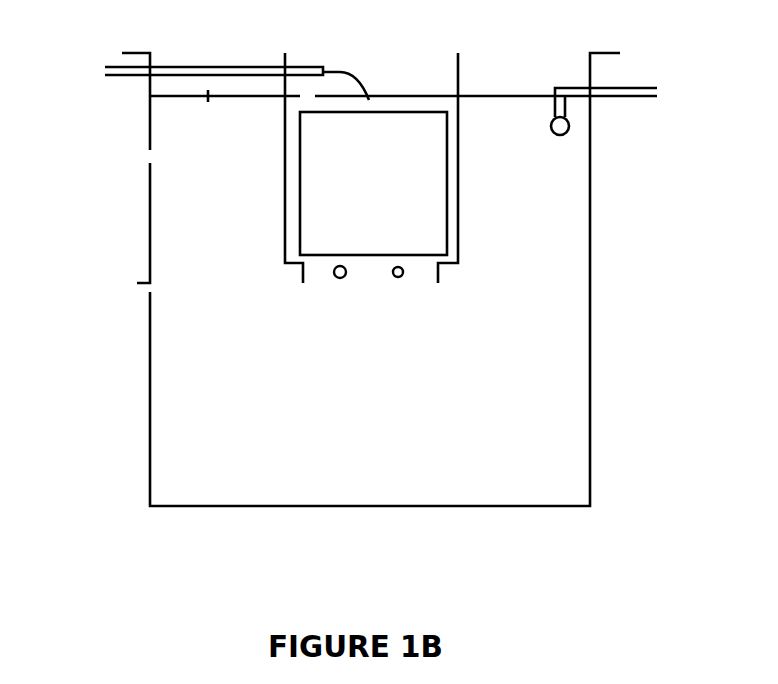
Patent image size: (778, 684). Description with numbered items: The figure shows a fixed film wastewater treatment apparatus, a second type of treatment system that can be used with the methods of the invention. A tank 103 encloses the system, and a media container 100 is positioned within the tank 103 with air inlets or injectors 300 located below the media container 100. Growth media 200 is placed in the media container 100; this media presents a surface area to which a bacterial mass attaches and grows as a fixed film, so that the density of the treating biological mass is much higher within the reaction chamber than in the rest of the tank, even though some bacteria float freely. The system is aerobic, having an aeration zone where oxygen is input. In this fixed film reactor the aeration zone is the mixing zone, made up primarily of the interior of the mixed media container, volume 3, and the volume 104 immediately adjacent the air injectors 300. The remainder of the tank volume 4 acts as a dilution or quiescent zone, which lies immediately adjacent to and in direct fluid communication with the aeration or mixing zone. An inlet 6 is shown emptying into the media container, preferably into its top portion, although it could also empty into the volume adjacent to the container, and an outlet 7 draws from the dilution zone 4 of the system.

The interior volume of the mixed media container 3 is at (344, 229).
The tank volume 4 is at (186, 221).
The inlet 6 is at (100, 70).
The outlet 7 is at (660, 93).
The media container 100 is at (458, 128).
The tank 103 is at (593, 231).
The volume immediately adjacent the air injectors 104 is at (380, 292).
The growth media 200 is at (427, 241).
The air inlets or injectors 300 is at (340, 280).